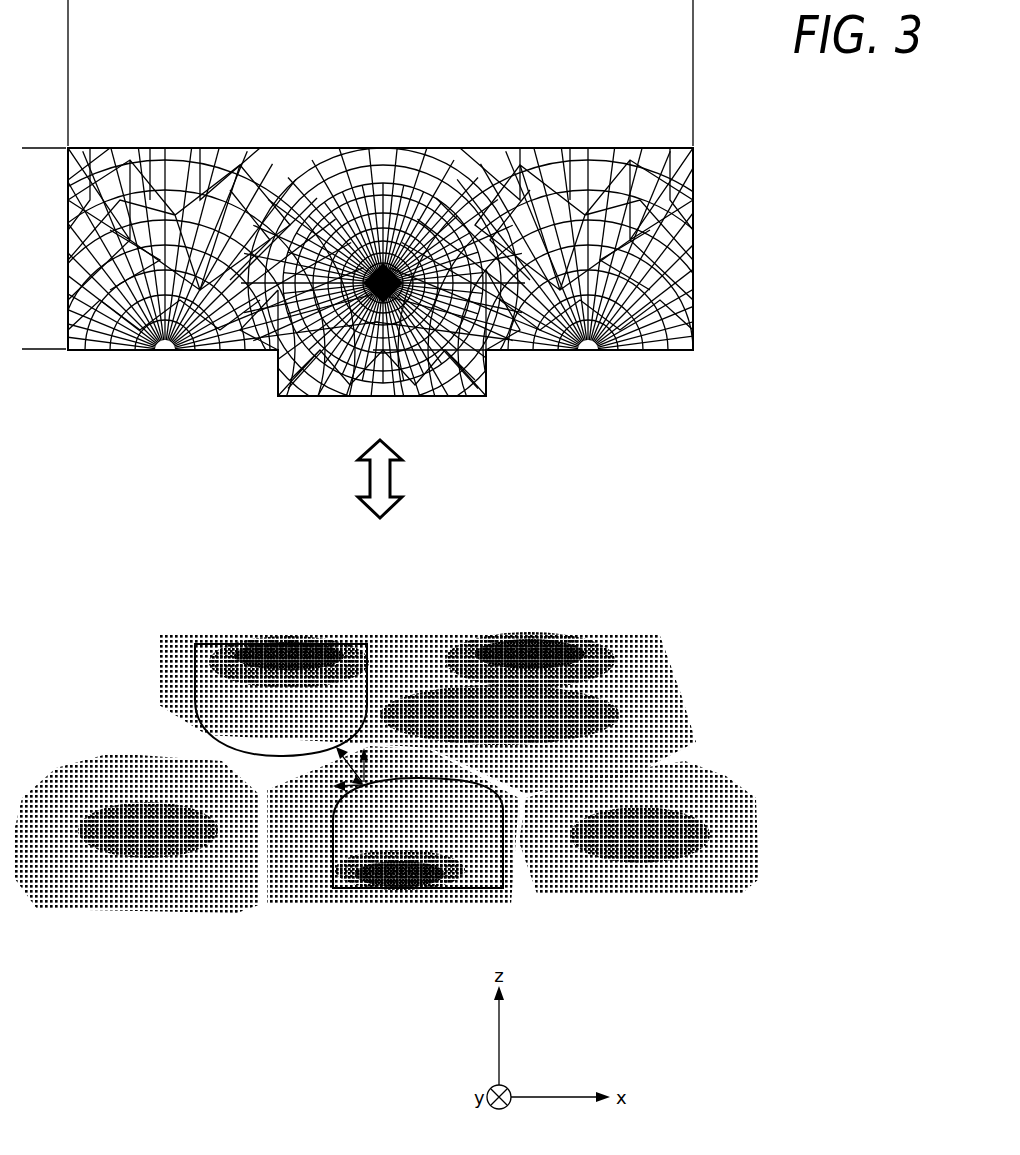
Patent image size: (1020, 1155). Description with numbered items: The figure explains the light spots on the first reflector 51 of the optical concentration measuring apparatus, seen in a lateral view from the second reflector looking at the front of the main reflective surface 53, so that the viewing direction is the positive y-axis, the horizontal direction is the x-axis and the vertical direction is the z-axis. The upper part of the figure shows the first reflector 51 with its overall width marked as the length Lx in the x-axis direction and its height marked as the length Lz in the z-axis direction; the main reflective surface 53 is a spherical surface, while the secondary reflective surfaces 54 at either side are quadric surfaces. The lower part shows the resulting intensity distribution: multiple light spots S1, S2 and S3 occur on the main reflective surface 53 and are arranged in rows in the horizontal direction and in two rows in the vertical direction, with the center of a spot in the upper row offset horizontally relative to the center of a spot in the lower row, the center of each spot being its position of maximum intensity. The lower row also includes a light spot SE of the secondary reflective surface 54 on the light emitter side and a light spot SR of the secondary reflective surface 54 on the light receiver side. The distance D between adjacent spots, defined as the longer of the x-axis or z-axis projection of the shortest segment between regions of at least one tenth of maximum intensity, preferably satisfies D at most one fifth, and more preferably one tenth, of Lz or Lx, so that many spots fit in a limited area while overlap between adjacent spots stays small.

The first reflector 51 is at (712, 144).
The main reflective surface 53 is at (388, 148).
The secondary reflective surfaces 54 is at (171, 353).
The light spot S1 is at (527, 666).
The light spot S2 is at (407, 890).
The light spot S3 is at (292, 668).
The light spot of the secondary reflective surface on the light receiver side SR is at (162, 878).
The light spot of the secondary reflective surface on the light emitter side SE is at (643, 865).
The distance between each light spot D is at (364, 768).
The length of the first reflector in the x-axis direction Lx is at (68, 30).
The length of the first reflector in the z-axis direction Lz is at (31, 148).